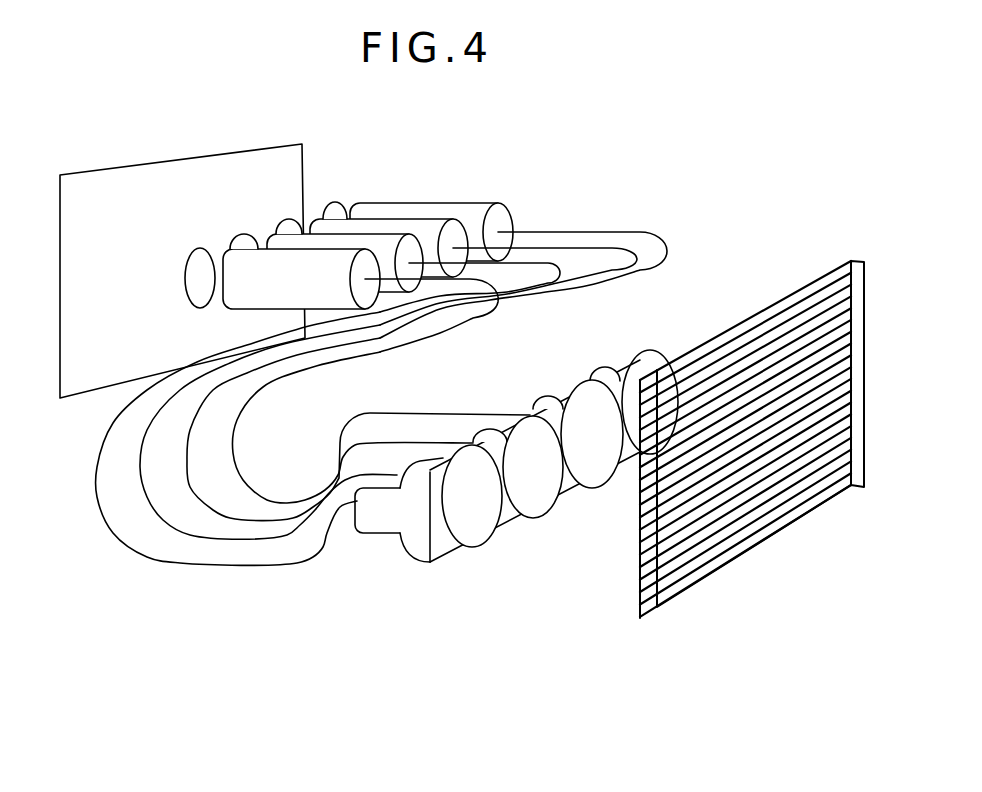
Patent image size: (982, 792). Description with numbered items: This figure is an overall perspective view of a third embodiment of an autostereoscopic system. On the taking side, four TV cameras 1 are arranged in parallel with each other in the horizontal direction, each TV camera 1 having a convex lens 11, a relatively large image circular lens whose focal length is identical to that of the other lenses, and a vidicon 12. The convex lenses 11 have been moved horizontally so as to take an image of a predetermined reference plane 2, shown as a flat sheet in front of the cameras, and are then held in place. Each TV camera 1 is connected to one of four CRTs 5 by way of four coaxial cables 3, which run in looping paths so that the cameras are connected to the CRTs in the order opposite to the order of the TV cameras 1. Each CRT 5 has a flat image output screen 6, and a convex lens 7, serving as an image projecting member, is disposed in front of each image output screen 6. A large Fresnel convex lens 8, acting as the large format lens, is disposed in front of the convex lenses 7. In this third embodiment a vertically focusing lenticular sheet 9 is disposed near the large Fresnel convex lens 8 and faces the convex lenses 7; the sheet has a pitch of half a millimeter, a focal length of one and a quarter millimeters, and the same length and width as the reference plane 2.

The TV camera 1 is at (468, 188).
The reference plane 2 is at (110, 195).
The coaxial cable 3 is at (97, 537).
The CRT 5 is at (418, 552).
The image output screen 6 is at (447, 557).
The convex lens 7 is at (477, 547).
The large Fresnel convex lens 8 is at (863, 258).
The vertically focusing lenticular sheet 9 is at (641, 618).
The convex lens 11 is at (337, 210).
The vidicon 12 is at (480, 202).